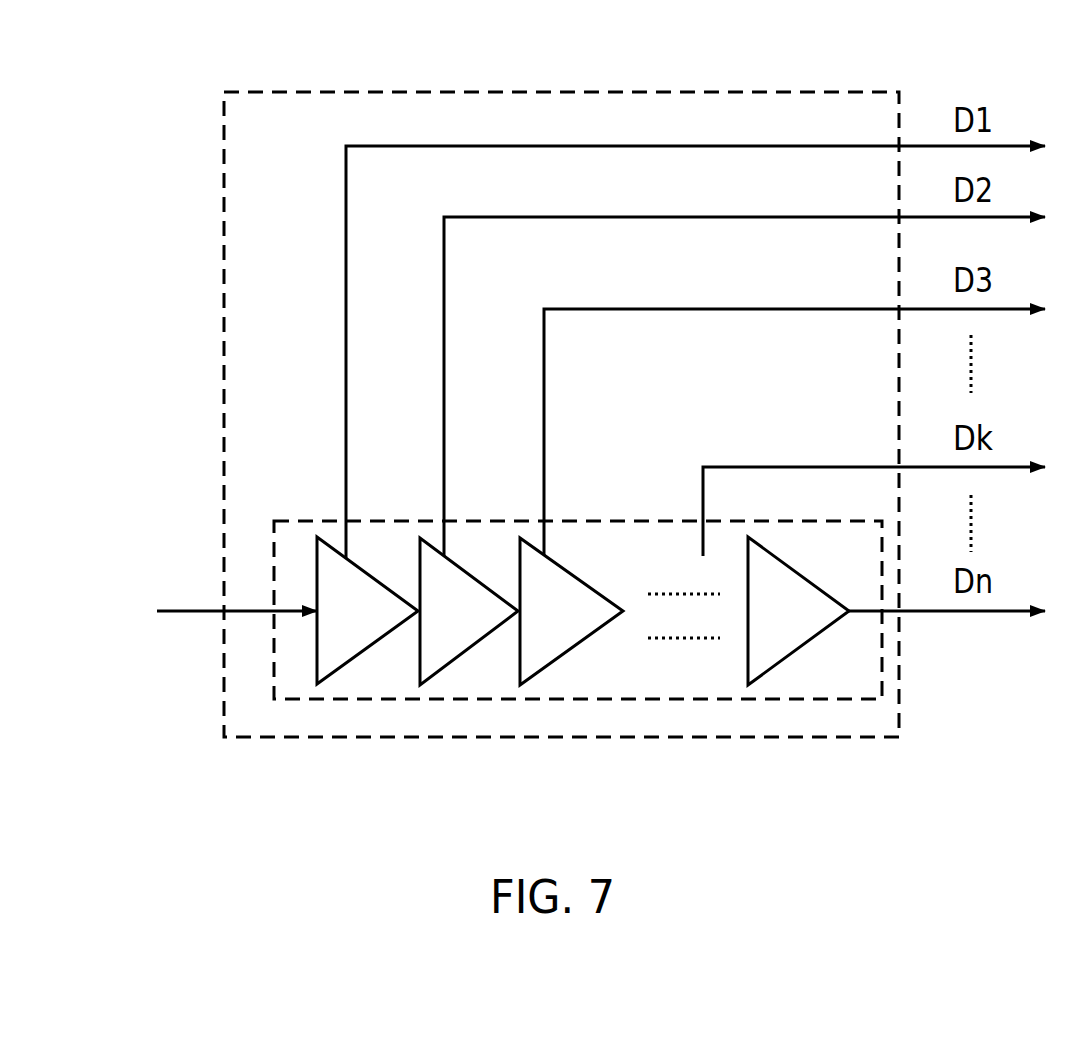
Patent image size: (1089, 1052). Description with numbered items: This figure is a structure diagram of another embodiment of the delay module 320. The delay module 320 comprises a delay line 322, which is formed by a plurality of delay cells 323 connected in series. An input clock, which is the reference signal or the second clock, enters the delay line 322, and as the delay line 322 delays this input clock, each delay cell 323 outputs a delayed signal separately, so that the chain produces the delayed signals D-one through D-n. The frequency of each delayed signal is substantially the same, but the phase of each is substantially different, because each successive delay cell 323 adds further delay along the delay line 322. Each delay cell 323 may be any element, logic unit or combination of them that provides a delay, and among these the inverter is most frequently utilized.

The delay module 320 is at (505, 92).
The delay line 322 is at (488, 699).
The delay cell 323 is at (320, 684).